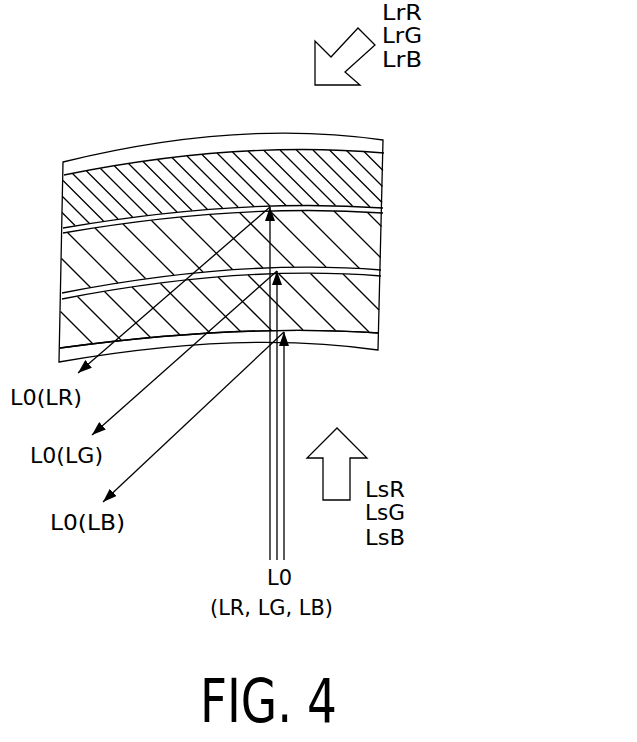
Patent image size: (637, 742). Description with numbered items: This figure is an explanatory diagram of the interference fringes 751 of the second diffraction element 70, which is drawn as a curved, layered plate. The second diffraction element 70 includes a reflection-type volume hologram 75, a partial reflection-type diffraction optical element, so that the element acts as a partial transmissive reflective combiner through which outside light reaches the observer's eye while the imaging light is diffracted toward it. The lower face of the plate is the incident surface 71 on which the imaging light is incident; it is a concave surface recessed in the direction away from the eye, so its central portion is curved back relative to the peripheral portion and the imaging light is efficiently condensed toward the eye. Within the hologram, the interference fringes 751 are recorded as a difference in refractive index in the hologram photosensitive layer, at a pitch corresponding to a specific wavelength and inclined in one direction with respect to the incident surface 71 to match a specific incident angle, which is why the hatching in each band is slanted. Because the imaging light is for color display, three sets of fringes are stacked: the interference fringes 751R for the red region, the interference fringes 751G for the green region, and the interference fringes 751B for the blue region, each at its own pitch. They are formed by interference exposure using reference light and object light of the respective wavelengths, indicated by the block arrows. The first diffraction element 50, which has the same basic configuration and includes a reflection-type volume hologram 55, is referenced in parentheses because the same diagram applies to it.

The second diffraction element 70 is at (293, 223).
The reflection-type volume hologram 75 is at (293, 223).
The first diffraction element 50 is at (293, 223).
The reflection-type volume hologram 55 is at (368, 139).
The interference fringes 751 is at (305, 248).
The interference fringes 751R is at (387, 190).
The interference fringes 751G is at (377, 245).
The interference fringes 751B is at (270, 310).
The incident surface 71 is at (231, 373).